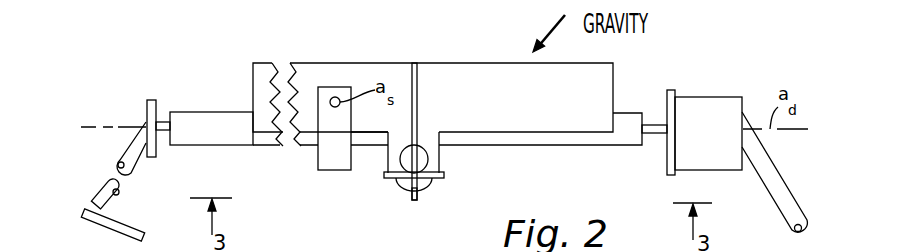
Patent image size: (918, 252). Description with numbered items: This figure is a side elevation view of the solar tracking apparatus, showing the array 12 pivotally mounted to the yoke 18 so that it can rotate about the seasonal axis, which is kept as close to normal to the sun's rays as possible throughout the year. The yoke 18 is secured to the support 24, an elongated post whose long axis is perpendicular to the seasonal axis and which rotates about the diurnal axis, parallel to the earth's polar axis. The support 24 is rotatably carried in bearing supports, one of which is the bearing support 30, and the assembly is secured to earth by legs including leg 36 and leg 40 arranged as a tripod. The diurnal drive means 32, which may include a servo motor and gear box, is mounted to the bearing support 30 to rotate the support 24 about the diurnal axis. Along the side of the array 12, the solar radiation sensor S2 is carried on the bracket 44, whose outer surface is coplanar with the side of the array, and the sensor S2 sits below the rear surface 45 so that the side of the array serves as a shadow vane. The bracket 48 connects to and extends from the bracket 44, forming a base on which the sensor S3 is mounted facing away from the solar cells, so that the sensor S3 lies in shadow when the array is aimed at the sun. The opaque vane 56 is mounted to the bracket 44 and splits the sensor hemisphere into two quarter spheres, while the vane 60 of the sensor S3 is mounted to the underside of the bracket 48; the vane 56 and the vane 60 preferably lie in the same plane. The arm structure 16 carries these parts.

The array 12 is at (459, 54).
The arm / beam 16 is at (332, 62).
The yoke 18 is at (323, 155).
The support 24 is at (217, 117).
The bearing support 30 is at (667, 90).
The diurnal drive means 32 is at (705, 96).
The leg 36 is at (101, 195).
The leg 40 is at (783, 183).
The bracket 44 is at (437, 152).
The rear surface 45 is at (583, 133).
The bracket 48 is at (438, 178).
The vane 56 is at (418, 110).
The vane 60 is at (408, 195).
The solar radiation sensor S2 is at (395, 158).
The sensor S3 is at (430, 187).